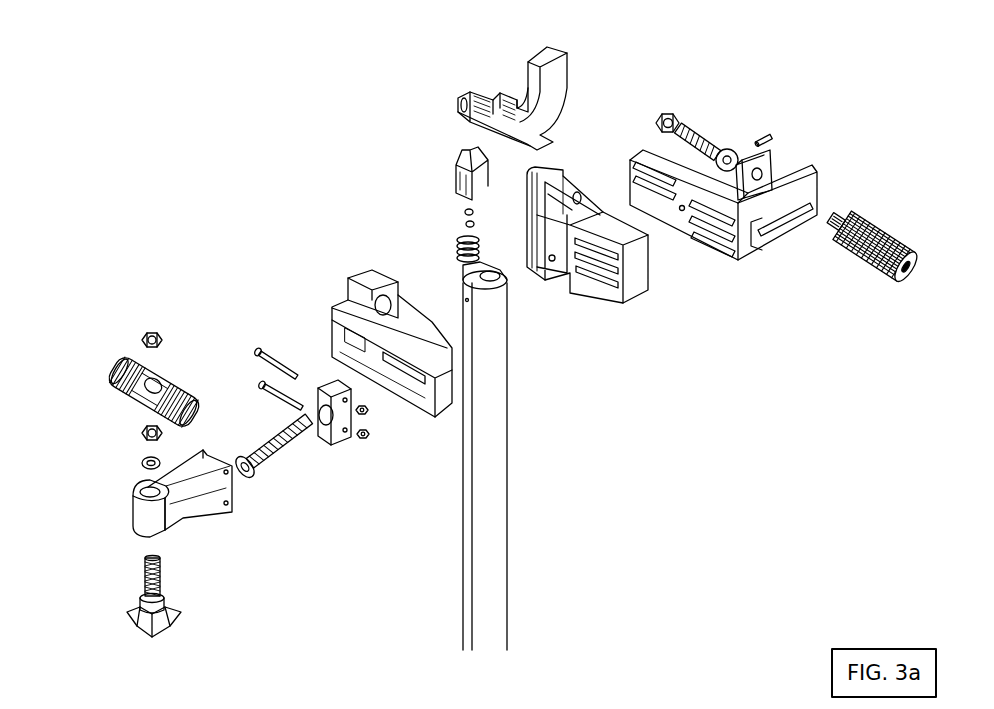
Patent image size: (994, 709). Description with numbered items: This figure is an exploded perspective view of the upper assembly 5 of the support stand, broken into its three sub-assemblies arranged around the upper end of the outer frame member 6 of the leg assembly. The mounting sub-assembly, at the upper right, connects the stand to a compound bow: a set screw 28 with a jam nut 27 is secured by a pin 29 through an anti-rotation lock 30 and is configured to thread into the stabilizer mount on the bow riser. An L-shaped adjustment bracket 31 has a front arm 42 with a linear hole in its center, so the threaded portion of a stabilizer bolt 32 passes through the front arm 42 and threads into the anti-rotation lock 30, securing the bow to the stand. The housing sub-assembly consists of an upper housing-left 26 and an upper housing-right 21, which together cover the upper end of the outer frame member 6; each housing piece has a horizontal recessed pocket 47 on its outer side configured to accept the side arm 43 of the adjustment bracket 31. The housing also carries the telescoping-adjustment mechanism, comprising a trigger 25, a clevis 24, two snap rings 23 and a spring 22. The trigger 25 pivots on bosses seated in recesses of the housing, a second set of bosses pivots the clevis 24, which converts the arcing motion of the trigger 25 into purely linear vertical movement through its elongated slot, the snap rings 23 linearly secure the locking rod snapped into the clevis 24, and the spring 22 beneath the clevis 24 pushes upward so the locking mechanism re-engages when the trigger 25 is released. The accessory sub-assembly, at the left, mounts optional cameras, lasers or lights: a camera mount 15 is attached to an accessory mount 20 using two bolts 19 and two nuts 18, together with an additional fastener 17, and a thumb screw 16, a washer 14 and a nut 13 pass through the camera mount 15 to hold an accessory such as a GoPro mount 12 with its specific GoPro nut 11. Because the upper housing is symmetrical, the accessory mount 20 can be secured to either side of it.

The upper assembly 5 is at (277, 116).
The pole 6 is at (510, 462).
The GoPro nut 11 is at (136, 336).
The threaded cylinder body 12 is at (106, 380).
The nut 13 is at (139, 426).
The washer 14 is at (140, 463).
The camera mount 15 is at (128, 512).
The thumb screw 16 is at (118, 614).
The screw 17 is at (283, 460).
The nuts 18 is at (363, 444).
The bolts 19 is at (258, 348).
The accessory mount 20 is at (318, 381).
The upper housing-right 21 is at (334, 288).
The spring 22 is at (450, 250).
The snap rings 23 is at (461, 221).
The clevis 24 is at (452, 165).
The trigger 25 is at (497, 80).
The upper housing-left 26 is at (614, 313).
The jam nut 27 is at (659, 110).
The set screw 28 is at (706, 126).
The pin 29 is at (768, 133).
The anti-rotation lock 30 is at (778, 155).
The L-shaped adjustment bracket 31 is at (761, 200).
The stabilizer bolt 32 is at (888, 215).
The front arm 42 is at (763, 250).
The side arm 43 is at (713, 257).
The horizontal recessed pocket 47 is at (407, 395).